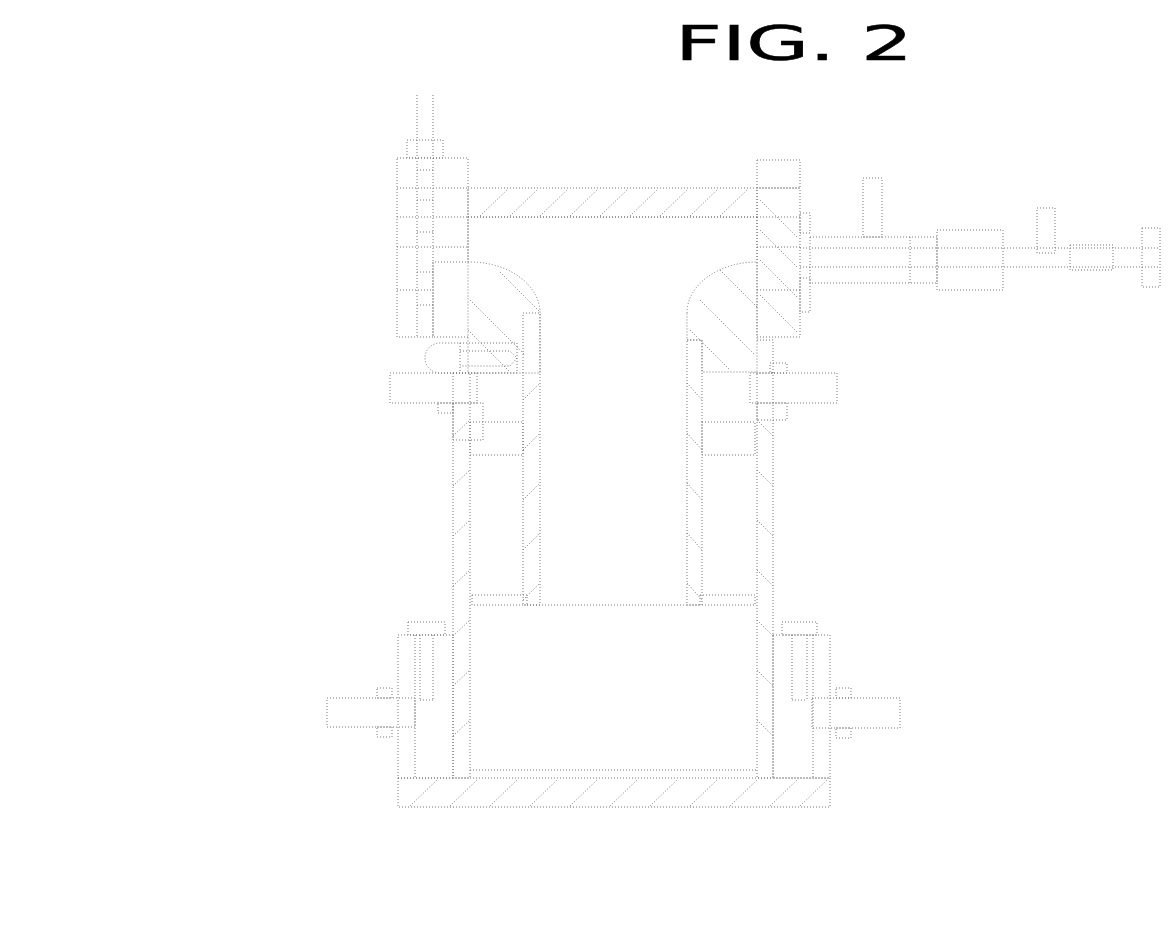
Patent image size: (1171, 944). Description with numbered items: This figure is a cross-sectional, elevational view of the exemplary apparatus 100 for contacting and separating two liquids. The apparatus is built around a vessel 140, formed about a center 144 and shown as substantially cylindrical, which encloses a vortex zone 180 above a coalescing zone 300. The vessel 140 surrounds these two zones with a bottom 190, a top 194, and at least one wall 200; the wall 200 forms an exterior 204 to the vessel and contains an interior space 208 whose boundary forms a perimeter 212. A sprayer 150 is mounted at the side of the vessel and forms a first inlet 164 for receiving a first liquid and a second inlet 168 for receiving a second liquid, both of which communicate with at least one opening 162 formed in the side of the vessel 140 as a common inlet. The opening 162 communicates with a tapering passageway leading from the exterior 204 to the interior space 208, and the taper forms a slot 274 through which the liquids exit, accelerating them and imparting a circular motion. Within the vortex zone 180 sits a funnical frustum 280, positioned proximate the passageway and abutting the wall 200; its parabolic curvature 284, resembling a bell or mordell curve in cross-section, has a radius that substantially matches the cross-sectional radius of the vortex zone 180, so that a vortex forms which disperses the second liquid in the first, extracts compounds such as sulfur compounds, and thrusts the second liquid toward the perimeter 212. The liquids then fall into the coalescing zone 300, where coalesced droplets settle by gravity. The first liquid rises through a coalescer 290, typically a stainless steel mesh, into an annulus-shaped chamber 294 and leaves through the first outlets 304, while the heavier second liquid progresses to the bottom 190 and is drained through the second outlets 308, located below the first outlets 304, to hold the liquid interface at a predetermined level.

The press assembly 100 is at (278, 202).
The vessel 140 is at (457, 596).
The center 144 is at (625, 826).
The sprayer 150 is at (1003, 287).
The opening 162 is at (823, 228).
The first inlet 164 is at (882, 182).
The second inlet 168 is at (1055, 212).
The vortex zone 180 is at (630, 276).
The bottom 190 is at (768, 794).
The top 194 is at (638, 186).
The wall 200 is at (762, 597).
The exterior 204 is at (800, 318).
The interior space 208 is at (695, 263).
The perimeter 212 is at (475, 222).
The slot 274 is at (728, 188).
The frustum 280 is at (697, 282).
The parabolic curvature 284 is at (543, 292).
The coalescer 290 is at (735, 597).
The annulus-shaped chamber 294 is at (730, 497).
The coalescing zone 300 is at (585, 459).
The first outlets 304 is at (838, 392).
The second outlets 308 is at (912, 735).